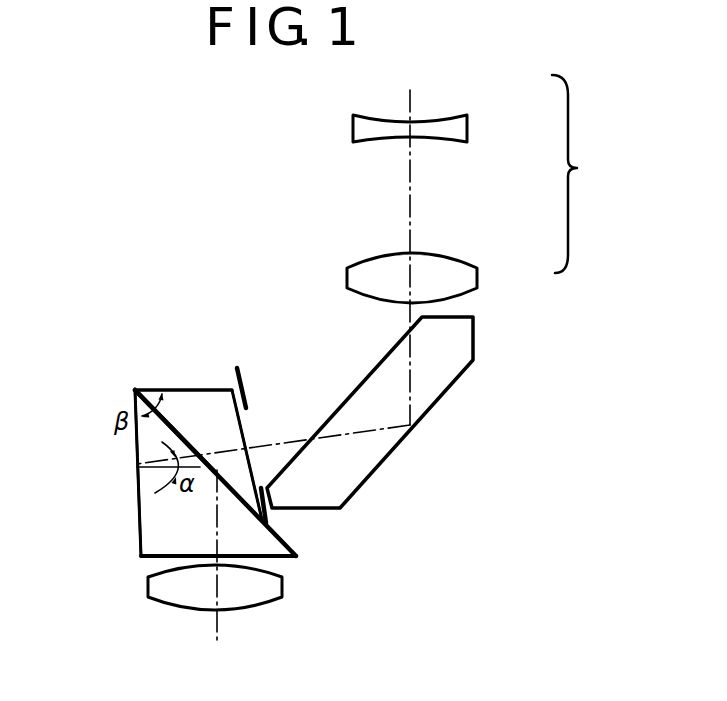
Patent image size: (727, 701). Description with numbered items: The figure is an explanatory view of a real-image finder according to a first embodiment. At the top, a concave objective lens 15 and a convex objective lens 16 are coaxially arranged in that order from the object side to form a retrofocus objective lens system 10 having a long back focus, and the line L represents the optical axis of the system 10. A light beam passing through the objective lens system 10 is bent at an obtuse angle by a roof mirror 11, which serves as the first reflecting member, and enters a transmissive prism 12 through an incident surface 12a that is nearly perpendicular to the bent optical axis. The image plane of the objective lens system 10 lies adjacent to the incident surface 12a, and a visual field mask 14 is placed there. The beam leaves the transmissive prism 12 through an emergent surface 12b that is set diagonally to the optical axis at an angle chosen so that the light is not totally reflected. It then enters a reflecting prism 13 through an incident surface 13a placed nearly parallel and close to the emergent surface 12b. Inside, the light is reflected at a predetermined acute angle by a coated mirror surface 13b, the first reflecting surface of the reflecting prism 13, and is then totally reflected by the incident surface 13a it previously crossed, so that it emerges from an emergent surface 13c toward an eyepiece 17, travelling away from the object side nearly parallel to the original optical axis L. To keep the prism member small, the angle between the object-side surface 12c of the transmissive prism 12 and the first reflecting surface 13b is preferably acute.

The optical axis L is at (410, 99).
The objective lens system 10 is at (583, 174).
The roof mirror 11 is at (458, 340).
The transmissive prism 12 is at (208, 405).
The incident surface 12a is at (243, 420).
The emergent surface 12b is at (175, 418).
The object-side surface 12c is at (190, 388).
The reflecting prism 13 is at (152, 543).
The incident surface 13a is at (278, 532).
The coated mirror surface 13b is at (137, 512).
The emergent surface 13c is at (289, 559).
The visual field mask 14 is at (243, 381).
The concave objective lens 15 is at (460, 128).
The convex objective lens 16 is at (470, 273).
The eyepiece 17 is at (253, 594).